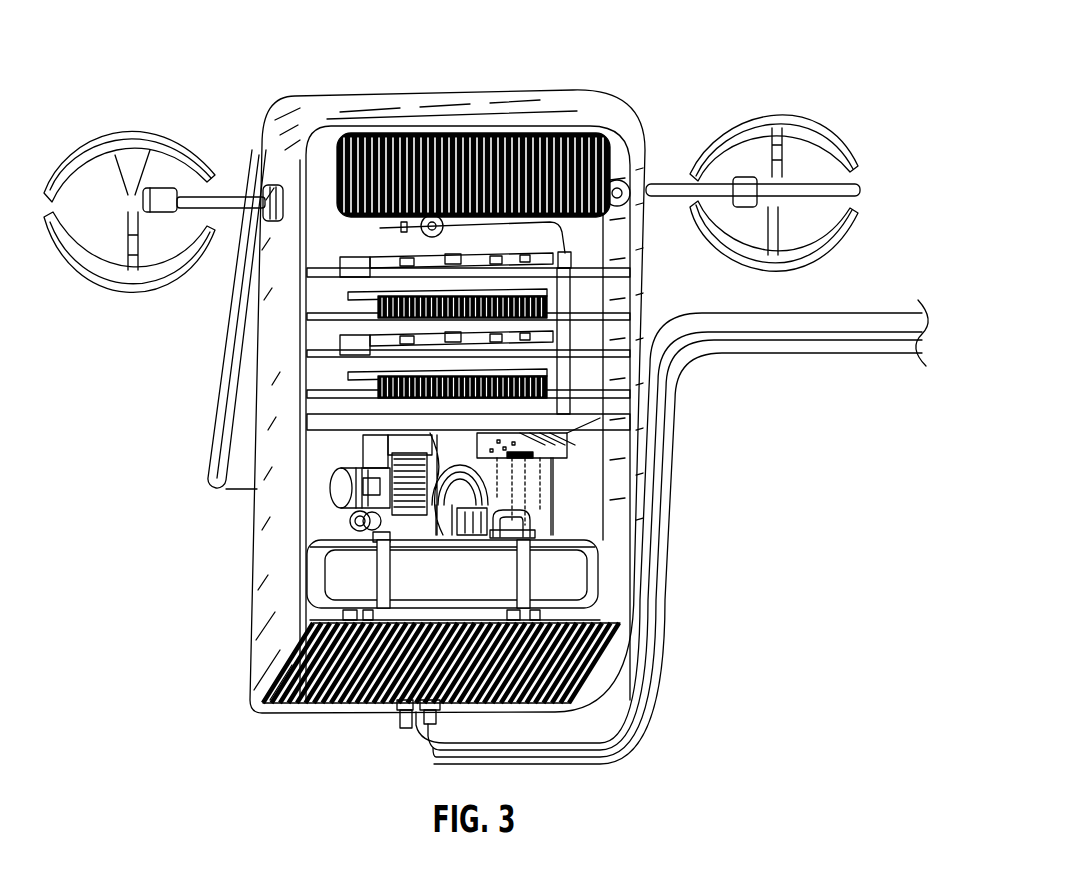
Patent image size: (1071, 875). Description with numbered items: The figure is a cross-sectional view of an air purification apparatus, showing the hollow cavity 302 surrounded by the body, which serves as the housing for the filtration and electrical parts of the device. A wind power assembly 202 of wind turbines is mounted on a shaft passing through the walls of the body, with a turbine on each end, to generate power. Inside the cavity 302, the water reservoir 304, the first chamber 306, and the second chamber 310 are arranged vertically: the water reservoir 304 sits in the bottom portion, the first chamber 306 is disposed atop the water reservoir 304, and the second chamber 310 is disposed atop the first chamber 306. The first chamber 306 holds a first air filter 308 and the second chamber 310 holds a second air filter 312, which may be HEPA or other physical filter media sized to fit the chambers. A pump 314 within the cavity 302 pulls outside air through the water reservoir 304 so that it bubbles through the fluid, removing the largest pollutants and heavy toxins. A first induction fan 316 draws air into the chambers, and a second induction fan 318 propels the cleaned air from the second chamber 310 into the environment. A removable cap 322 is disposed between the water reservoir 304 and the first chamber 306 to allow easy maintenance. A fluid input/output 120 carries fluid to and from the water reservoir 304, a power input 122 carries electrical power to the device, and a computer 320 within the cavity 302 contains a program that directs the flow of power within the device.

The wind power assembly 202 is at (43, 83).
The second induction fan 318 is at (386, 257).
The first induction fan 316 is at (357, 333).
The second chamber 310 is at (325, 336).
The first chamber 306 is at (325, 407).
The cavity 302 is at (330, 498).
The removable cap 322 is at (327, 453).
The second air filter 312 is at (478, 312).
The first air filter 308 is at (540, 390).
The pump 314 is at (530, 435).
The computer 320 is at (440, 480).
The water reservoir 304 is at (507, 558).
The fluid input/output 120 is at (397, 725).
The power input 122 is at (434, 714).